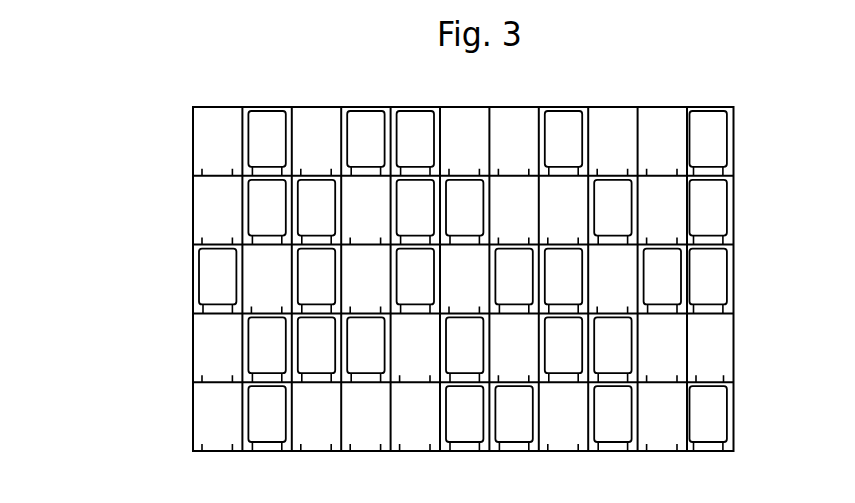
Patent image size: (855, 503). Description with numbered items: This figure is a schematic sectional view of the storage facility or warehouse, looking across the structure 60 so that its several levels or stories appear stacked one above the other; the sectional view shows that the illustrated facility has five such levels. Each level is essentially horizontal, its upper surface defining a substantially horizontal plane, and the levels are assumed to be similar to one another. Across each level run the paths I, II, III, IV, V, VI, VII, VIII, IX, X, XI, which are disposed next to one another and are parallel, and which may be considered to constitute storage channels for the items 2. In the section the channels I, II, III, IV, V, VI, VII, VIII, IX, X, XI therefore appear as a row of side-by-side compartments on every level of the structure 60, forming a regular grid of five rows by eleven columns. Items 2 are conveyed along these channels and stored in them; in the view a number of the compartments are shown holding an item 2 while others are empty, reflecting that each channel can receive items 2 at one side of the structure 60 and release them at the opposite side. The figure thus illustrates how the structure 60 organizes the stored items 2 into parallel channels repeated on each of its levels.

The item 2 is at (440, 303).
The structure 60 is at (134, 300).
The path I is at (207, 265).
The path II is at (255, 265).
The path III is at (306, 265).
The path IV is at (356, 265).
The path V is at (405, 265).
The rack column VI is at (454, 265).
The path VII is at (506, 265).
The path VIII is at (556, 265).
The path IX is at (604, 265).
The path X is at (652, 265).
The path XI is at (700, 265).